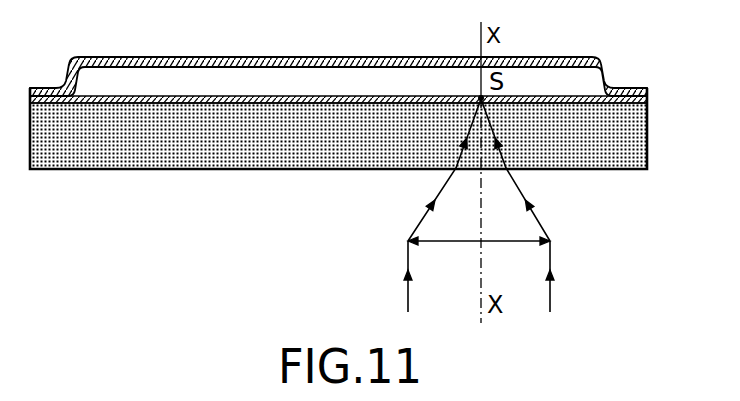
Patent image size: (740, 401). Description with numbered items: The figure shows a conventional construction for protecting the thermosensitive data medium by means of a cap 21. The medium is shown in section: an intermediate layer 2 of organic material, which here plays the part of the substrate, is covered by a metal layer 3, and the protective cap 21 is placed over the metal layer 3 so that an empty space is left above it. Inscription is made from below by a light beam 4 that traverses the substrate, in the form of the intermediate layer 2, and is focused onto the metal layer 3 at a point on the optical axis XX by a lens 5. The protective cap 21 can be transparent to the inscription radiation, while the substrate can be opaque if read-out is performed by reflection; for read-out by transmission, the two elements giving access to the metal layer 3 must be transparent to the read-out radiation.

The intermediate layer 2 is at (641, 144).
The metal layer 3 is at (129, 75).
The cap 21 is at (272, 57).
The light beam 4 is at (407, 289).
The lens 5 is at (477, 264).